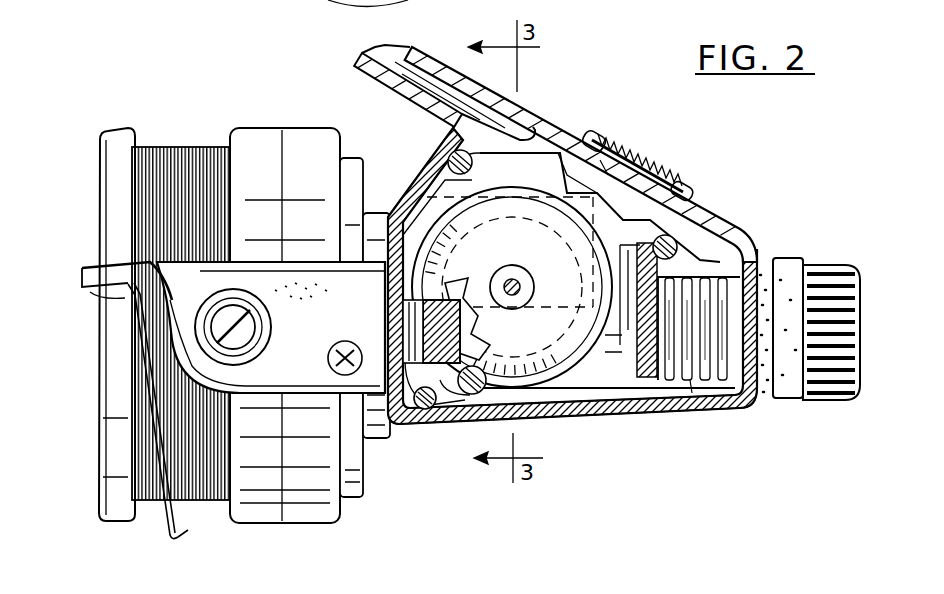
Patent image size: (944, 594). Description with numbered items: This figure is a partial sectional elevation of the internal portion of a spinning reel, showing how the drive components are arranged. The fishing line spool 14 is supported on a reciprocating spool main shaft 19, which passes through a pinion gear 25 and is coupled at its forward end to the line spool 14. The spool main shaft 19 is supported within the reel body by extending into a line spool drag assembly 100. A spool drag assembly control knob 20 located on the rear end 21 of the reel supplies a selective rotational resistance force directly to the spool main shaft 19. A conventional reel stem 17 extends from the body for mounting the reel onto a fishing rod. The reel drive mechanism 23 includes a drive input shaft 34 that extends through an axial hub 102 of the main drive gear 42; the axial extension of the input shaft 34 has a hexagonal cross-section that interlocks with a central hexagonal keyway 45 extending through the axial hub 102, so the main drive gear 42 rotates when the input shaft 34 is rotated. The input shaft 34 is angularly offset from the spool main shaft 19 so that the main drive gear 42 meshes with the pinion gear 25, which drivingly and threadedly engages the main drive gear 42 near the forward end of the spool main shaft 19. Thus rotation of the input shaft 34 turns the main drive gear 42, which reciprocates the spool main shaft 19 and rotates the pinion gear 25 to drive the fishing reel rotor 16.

The fishing line spool 14 is at (167, 150).
The fishing reel rotor 16 is at (317, 257).
The reel stem 17 is at (513, 110).
The spool main shaft 19 is at (610, 352).
The spool drag assembly control knob 20 is at (717, 393).
The rear end 21 is at (753, 255).
The reel drive mechanism 23 is at (560, 181).
The pinion gear 25 is at (445, 380).
The drive input shaft 34 is at (503, 285).
The main drive gear 42 is at (528, 290).
The hexagonal keyway 45 is at (512, 278).
The line spool drag assembly 100 is at (410, 424).
The axial hub 102 is at (537, 308).